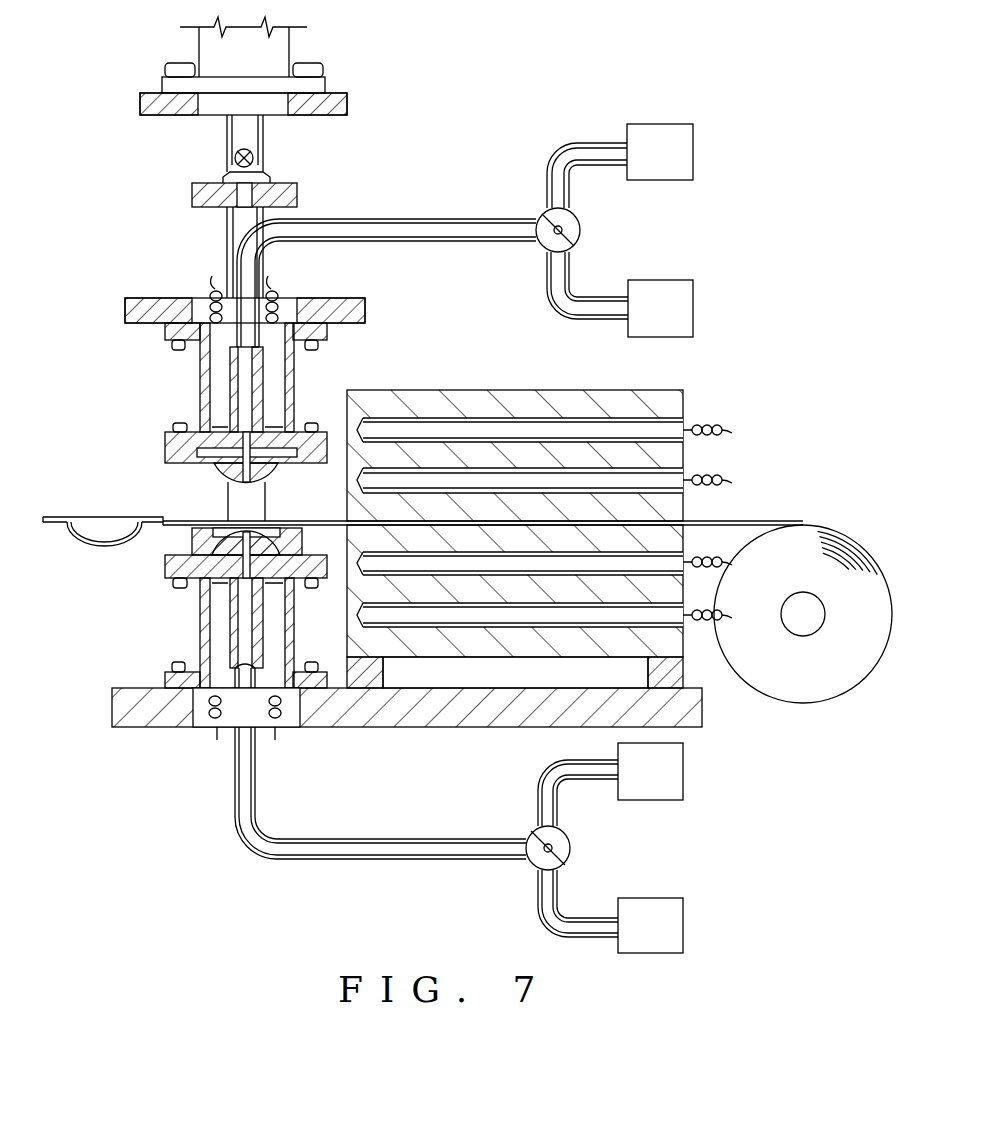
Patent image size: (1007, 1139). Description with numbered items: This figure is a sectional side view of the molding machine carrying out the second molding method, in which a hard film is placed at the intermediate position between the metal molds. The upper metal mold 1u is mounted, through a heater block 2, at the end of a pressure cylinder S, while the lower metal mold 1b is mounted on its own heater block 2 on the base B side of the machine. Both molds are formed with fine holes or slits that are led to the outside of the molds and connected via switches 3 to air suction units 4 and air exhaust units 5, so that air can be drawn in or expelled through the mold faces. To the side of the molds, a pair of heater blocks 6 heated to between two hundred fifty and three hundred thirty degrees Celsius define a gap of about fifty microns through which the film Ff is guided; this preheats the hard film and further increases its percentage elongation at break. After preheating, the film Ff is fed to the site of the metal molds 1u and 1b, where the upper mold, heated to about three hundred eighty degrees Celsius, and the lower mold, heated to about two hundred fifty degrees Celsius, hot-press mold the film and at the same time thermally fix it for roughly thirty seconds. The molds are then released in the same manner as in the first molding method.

The pressure cylinder S is at (292, 43).
The upper metal mold 1u is at (165, 453).
The lower metal mold 1b is at (167, 555).
The heater block 2 is at (293, 392).
The switch 3 is at (582, 232).
The air suction unit 4 is at (682, 310).
The air exhaust unit 5 is at (680, 153).
The heater block 6 is at (535, 390).
The base B is at (368, 728).
The film Ff is at (752, 523).